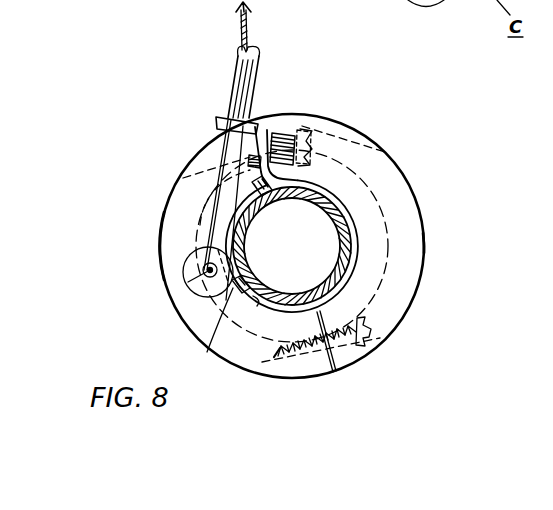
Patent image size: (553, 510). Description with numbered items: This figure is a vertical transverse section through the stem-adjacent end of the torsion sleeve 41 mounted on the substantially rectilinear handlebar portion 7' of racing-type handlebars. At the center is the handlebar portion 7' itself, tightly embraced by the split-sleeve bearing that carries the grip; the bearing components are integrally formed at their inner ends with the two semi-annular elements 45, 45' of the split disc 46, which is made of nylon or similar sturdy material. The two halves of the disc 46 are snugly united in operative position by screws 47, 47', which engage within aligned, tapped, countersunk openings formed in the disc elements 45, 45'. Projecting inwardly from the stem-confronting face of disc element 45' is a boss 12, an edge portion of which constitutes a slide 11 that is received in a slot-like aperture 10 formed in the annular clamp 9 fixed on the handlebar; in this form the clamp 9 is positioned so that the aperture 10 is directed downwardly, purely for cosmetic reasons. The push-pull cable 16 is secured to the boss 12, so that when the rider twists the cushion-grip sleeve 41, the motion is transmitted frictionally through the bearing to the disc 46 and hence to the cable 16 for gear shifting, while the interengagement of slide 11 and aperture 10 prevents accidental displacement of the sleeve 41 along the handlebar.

The handlebar portion 7' is at (367, 246).
The annular clamp 9 is at (350, 197).
The slot-like aperture 10 is at (231, 227).
The slide 11 is at (209, 351).
The boss 12 is at (186, 257).
The push-pull cable 16 is at (253, 28).
The torsion sleeve 41 is at (387, 212).
The semi-annular disc element 45 is at (336, 246).
The semi-annular disc element 45' is at (110, 240).
The disc 46 is at (424, 253).
The screw 47 is at (343, 123).
The screw 47' is at (373, 341).